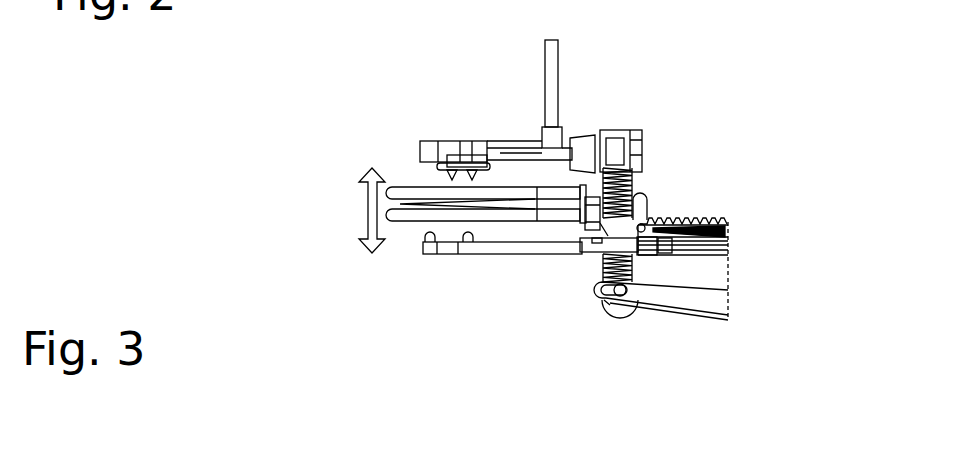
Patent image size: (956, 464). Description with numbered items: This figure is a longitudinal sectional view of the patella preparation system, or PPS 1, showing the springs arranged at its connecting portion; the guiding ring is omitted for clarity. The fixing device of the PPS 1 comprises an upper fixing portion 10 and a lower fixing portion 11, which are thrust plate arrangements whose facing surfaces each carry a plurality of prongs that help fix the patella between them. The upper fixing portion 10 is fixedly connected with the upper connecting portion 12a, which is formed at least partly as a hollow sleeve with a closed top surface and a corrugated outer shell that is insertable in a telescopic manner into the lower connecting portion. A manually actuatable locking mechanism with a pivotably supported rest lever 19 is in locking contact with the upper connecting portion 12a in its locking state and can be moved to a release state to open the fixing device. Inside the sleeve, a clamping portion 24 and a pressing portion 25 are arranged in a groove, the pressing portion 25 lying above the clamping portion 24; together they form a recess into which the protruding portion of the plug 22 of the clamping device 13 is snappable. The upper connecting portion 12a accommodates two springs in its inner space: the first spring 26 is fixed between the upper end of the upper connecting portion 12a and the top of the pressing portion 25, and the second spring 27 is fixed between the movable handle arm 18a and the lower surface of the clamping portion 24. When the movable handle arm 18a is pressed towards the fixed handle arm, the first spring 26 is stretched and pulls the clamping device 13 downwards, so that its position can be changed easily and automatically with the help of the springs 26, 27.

The patella preparation system 1 is at (618, 80).
The upper fixing portion 10 is at (440, 177).
The lower fixing portion 11 is at (497, 262).
The upper connecting portion 12a is at (633, 179).
The clamping device 13 is at (400, 229).
The movable handle arm 18a is at (716, 318).
The rest lever 19 is at (733, 222).
The plug 22 is at (640, 260).
The clamping portion 24 is at (657, 260).
The pressing portion 25 is at (668, 220).
The first spring 26 is at (593, 227).
The second spring 27 is at (597, 273).